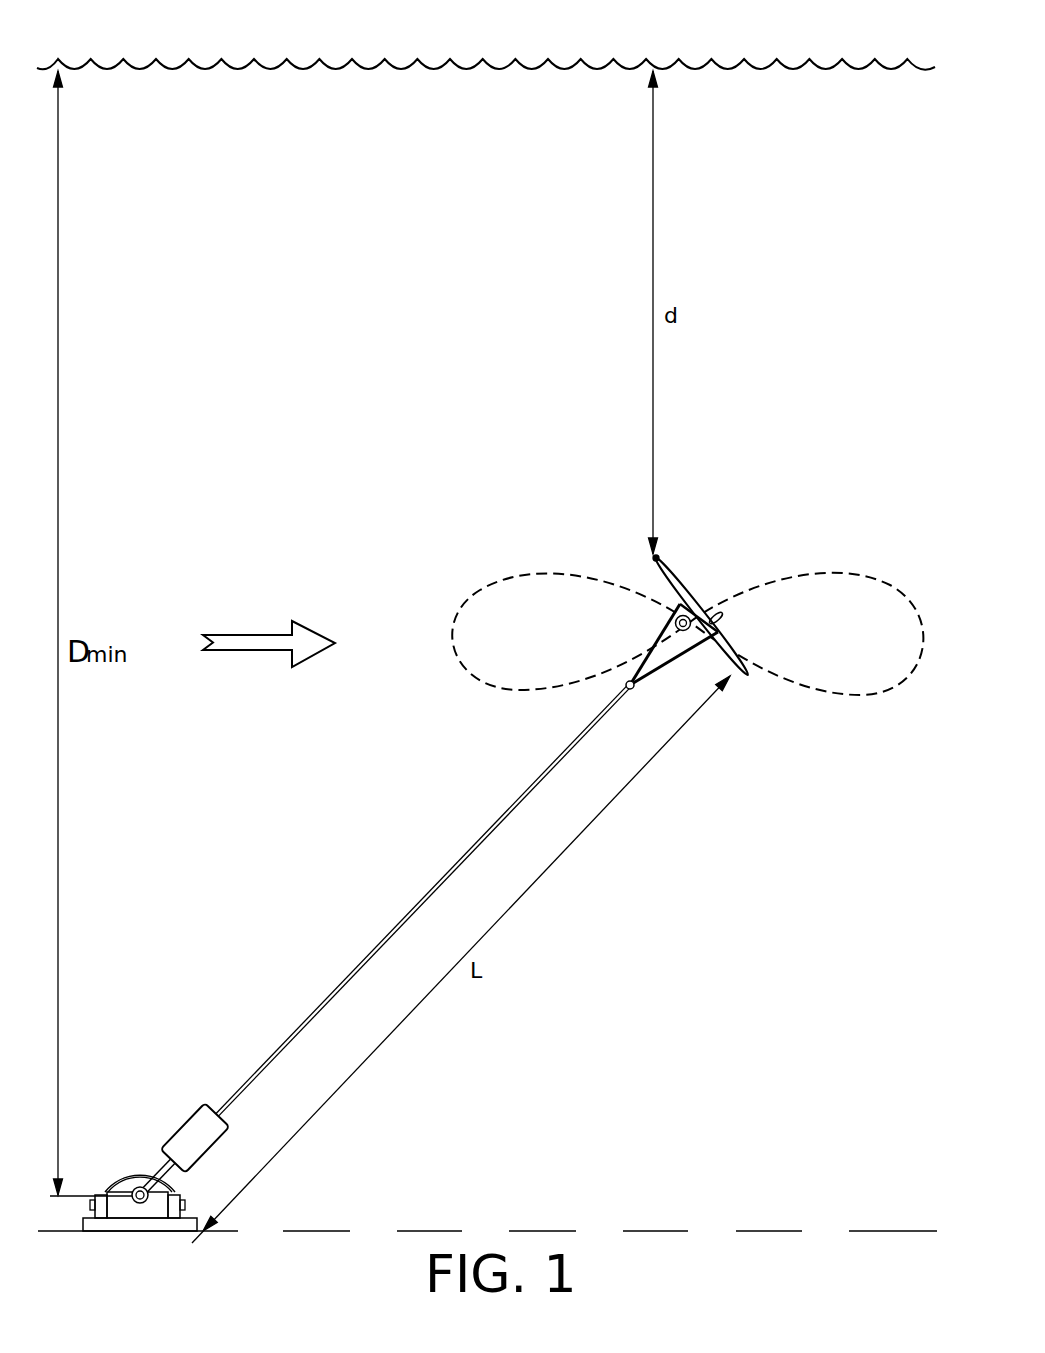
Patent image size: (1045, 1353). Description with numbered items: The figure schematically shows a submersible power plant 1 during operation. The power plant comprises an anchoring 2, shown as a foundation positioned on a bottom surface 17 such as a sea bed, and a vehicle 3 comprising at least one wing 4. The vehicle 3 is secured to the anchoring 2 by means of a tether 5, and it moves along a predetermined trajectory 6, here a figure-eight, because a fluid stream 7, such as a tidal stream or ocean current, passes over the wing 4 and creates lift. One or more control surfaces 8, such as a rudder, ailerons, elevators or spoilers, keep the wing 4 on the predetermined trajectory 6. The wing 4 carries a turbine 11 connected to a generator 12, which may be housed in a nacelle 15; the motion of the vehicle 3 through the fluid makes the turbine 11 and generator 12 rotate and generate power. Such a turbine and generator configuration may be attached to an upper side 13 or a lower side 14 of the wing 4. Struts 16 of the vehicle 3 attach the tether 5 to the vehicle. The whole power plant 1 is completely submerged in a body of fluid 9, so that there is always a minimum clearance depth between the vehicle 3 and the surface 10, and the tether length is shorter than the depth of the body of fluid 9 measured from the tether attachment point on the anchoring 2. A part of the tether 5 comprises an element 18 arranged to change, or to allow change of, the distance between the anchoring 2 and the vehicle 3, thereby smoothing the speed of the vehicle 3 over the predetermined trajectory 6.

The submersible power plant 1 is at (575, 460).
The anchoring 2 is at (123, 1225).
The vehicle 3 is at (666, 632).
The wing 4 is at (700, 615).
The tether 5 is at (420, 902).
The predetermined trajectory 6 is at (830, 580).
The fluid stream 7 is at (250, 635).
The control surfaces 8 is at (735, 610).
The body of fluid 9 is at (360, 182).
The surface 10 is at (467, 69).
The turbine 11 is at (620, 594).
The generator 12 is at (663, 613).
The upper side 13 is at (690, 607).
The lower side 14 is at (662, 580).
The nacelle 15 is at (683, 645).
The struts 16 is at (652, 640).
The bottom surface 17 is at (658, 1231).
The element 18 is at (179, 1127).